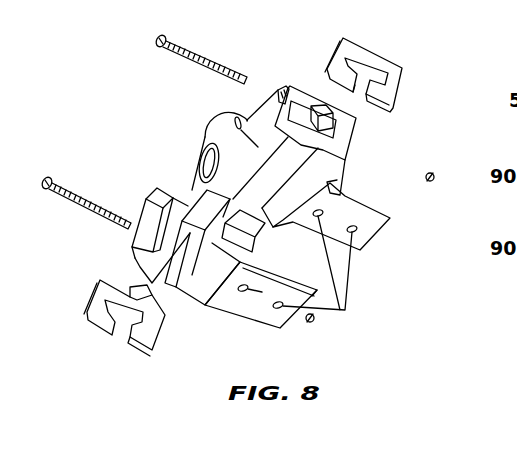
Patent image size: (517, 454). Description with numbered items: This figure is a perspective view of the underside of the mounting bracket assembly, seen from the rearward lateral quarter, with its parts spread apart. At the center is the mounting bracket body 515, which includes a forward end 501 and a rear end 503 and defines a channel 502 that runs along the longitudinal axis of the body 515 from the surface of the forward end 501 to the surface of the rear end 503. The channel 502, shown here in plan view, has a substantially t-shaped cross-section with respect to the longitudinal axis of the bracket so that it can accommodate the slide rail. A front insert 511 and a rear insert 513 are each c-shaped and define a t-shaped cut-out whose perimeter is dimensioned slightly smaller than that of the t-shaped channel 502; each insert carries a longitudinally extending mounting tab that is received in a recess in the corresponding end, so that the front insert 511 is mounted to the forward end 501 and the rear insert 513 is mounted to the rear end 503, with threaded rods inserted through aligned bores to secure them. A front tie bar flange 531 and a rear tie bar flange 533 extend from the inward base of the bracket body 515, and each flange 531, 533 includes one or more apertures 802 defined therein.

The forward end 501 is at (189, 303).
The channel 502 is at (262, 188).
The rear end 503 is at (307, 97).
The front insert 511 is at (92, 303).
The rear insert 513 is at (395, 73).
The mounting bracket body 515 is at (188, 196).
The front tie bar flange 531 is at (258, 307).
The rear tie bar flange 533 is at (342, 213).
The apertures 802 is at (340, 310).